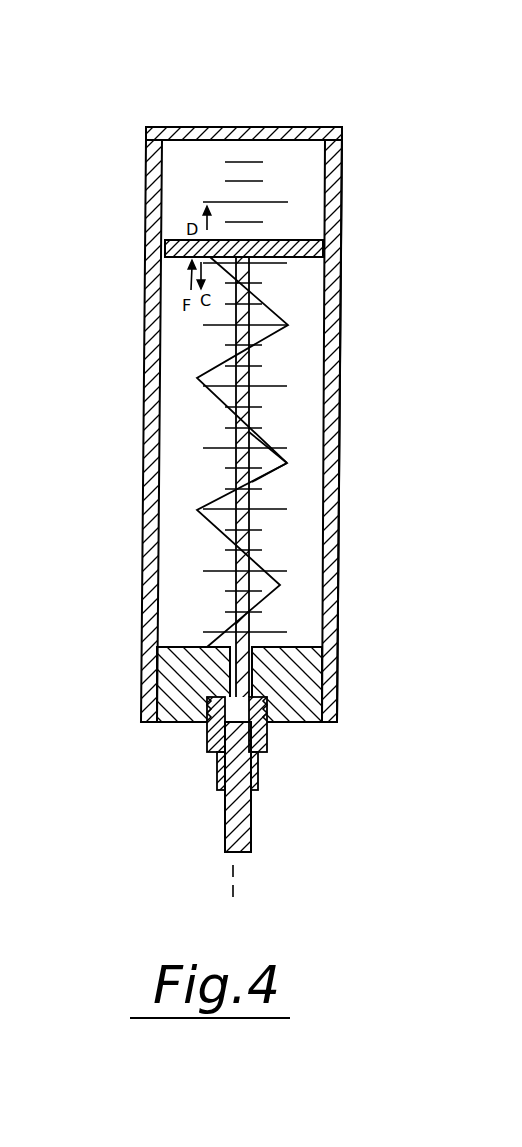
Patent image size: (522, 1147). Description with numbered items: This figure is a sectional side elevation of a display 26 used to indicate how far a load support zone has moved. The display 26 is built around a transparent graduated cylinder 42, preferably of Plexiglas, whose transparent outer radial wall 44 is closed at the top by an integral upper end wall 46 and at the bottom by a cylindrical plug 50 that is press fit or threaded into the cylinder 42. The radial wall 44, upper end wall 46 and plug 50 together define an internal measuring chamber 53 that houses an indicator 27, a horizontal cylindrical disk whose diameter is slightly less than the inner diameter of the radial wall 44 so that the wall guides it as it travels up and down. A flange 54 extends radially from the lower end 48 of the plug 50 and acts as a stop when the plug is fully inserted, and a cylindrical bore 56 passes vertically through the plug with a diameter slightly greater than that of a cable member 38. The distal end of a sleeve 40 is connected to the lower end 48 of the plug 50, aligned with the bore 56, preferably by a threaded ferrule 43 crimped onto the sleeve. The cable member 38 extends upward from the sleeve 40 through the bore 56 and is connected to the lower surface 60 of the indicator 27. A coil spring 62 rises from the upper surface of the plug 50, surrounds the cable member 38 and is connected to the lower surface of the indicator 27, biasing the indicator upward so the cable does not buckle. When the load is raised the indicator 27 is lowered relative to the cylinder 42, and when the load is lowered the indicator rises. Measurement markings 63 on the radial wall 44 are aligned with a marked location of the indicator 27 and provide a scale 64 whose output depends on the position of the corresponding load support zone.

The display 26 is at (364, 66).
The upper end wall 46 is at (285, 126).
The transparent graduated cylinder 42 is at (138, 338).
The outer radial wall 44 is at (340, 381).
The internal measuring chamber 53 is at (199, 428).
The measurement markings 63 is at (217, 443).
The cable member 38 is at (262, 494).
The indicator 27 is at (295, 238).
The lower surface 60 is at (303, 258).
The scale 64 is at (279, 434).
The coil spring 62 is at (252, 480).
The lower end 48 is at (160, 723).
The cylindrical bore 56 is at (222, 708).
The flange 54 is at (338, 722).
The cylindrical plug 50 is at (287, 730).
The threaded ferrule 43 is at (208, 779).
The sleeve 40 is at (220, 806).